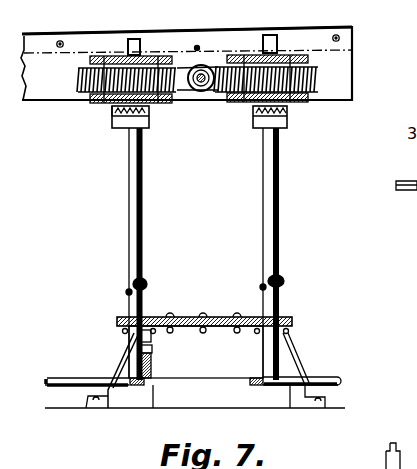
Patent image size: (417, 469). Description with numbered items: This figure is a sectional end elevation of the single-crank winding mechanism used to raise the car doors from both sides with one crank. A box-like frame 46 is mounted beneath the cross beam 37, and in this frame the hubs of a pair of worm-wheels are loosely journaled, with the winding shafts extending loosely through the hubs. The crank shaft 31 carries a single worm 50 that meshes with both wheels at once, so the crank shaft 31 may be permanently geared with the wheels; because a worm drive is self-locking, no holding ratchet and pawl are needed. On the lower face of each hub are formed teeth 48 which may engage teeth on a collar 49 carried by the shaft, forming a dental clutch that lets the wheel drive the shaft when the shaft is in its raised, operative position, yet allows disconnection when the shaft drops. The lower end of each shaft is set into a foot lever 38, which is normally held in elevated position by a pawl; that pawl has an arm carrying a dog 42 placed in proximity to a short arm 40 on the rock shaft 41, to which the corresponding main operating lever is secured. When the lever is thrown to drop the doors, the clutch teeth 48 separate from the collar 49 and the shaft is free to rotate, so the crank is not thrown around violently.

The crank shaft 31 is at (199, 48).
The cross beam 37 is at (346, 70).
The foot lever 38 is at (195, 373).
The short arm 40 is at (153, 360).
The rock shaft 41 is at (216, 384).
The dog 42 is at (152, 338).
The box-like frame 46 is at (152, 62).
The teeth 48 is at (284, 100).
The collar 49 is at (281, 124).
The worm 50 is at (203, 85).